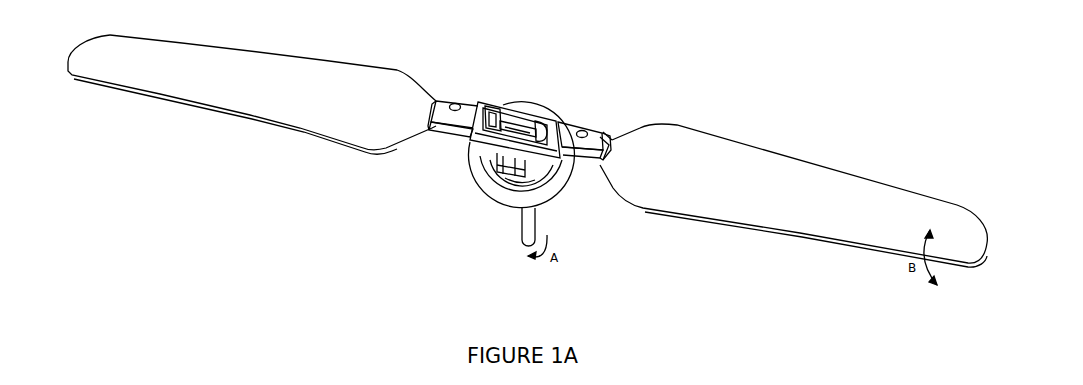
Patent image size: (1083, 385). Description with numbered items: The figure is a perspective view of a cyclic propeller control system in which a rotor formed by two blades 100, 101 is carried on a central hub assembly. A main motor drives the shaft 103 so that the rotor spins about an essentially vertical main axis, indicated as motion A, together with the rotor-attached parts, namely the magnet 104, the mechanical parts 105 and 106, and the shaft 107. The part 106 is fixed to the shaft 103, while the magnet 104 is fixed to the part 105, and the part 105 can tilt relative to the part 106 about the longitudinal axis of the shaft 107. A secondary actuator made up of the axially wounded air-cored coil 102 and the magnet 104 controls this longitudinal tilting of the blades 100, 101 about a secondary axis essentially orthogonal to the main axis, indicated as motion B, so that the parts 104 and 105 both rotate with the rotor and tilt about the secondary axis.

The blade 100 is at (283, 107).
The blade 101 is at (830, 225).
The axially wounded air-cored coil 102 is at (487, 190).
The shaft 103 is at (525, 222).
The magnet 104 is at (530, 165).
The mechanical part 105 is at (557, 120).
The mechanical part 106 is at (490, 112).
The shaft 107 is at (505, 120).